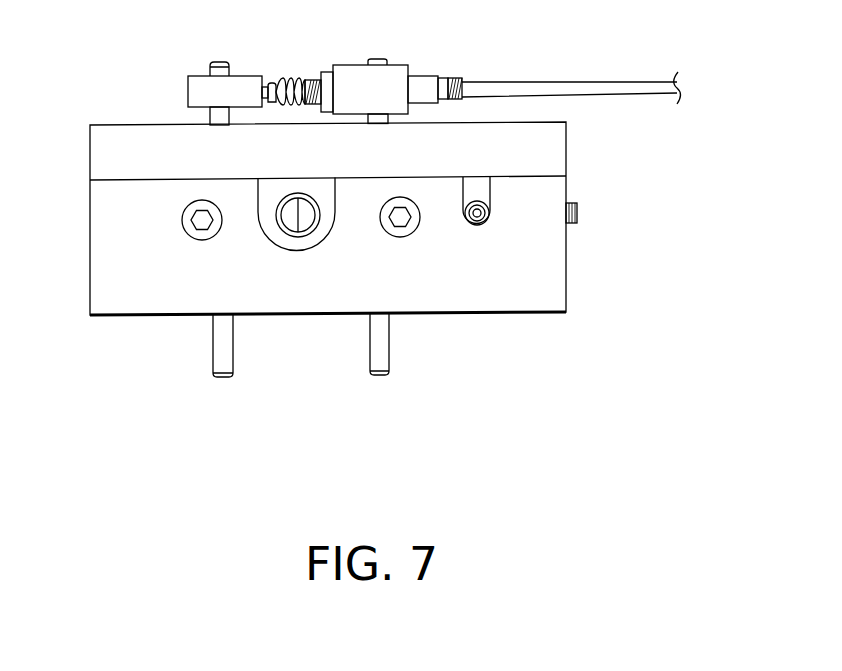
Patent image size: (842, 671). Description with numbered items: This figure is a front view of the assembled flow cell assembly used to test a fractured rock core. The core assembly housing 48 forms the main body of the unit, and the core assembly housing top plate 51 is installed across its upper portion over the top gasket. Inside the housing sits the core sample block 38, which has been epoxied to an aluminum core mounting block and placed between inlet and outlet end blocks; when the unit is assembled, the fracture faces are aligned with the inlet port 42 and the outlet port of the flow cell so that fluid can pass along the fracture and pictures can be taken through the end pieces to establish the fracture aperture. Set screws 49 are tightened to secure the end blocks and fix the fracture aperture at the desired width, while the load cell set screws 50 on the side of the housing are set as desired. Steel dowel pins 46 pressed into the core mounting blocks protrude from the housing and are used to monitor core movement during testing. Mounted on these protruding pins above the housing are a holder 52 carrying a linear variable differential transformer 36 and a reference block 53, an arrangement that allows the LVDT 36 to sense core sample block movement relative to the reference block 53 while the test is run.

The linear variable differential transformer 36 is at (308, 72).
The core sample block 38 is at (307, 213).
The inlet port 42 is at (312, 193).
The pins 46 is at (220, 57).
The core assembly housing 48 is at (568, 271).
The set screws 49 is at (223, 238).
The load cell set screws 50 is at (579, 213).
The core assembly housing top plate 51 is at (568, 143).
The holder 52 is at (414, 62).
The reference block 53 is at (259, 71).